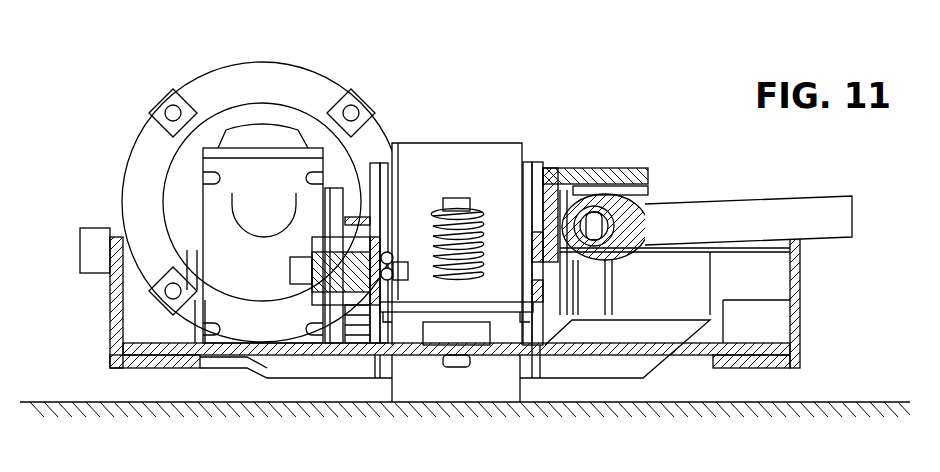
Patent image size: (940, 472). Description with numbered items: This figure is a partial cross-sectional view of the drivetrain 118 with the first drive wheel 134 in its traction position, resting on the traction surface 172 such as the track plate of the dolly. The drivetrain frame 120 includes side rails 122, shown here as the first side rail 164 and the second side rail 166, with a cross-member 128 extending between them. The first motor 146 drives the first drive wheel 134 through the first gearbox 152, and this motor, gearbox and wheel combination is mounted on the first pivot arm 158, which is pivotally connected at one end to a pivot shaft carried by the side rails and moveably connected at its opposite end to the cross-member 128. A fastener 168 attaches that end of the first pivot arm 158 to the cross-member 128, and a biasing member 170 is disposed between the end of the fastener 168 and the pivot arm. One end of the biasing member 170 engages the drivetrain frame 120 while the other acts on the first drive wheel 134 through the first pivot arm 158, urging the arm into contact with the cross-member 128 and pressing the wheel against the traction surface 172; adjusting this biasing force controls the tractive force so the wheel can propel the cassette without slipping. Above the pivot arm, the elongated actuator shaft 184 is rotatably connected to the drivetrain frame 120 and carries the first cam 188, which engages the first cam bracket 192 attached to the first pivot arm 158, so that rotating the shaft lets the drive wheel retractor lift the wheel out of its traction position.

The drivetrain 118 is at (573, 133).
The drivetrain frame 120 is at (800, 258).
The side rails 122 is at (800, 284).
The cross-member 128 is at (423, 357).
The first drive wheel 134 is at (455, 143).
The first motor 146 is at (332, 78).
The first gearbox 152 is at (248, 147).
The first pivot arm 158 is at (497, 303).
The first side rail 164 is at (800, 322).
The second side rail 166 is at (110, 350).
The fastener 168 is at (445, 203).
The biasing member 170 is at (482, 240).
The traction surface 172 is at (870, 401).
The actuator shaft 184 is at (635, 227).
The first cam 188 is at (620, 228).
The first cam bracket 192 is at (617, 168).